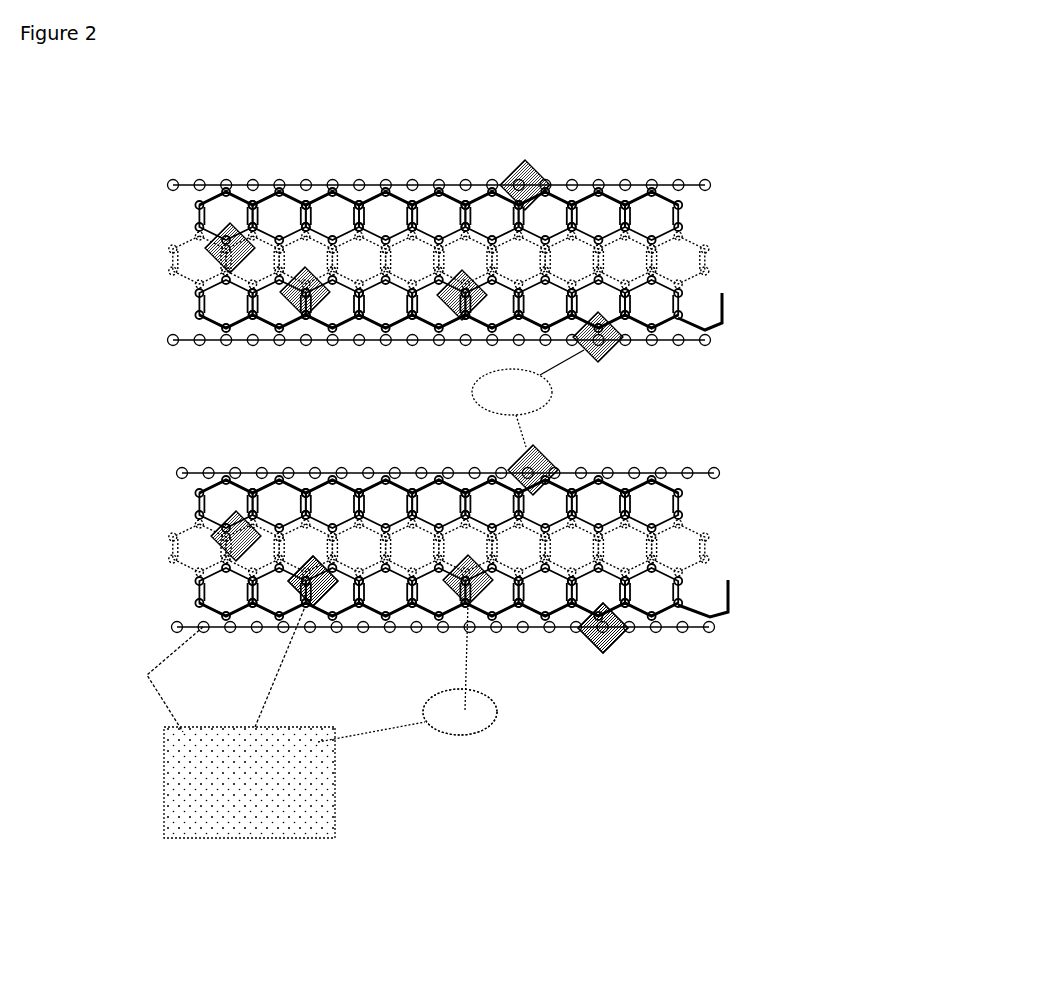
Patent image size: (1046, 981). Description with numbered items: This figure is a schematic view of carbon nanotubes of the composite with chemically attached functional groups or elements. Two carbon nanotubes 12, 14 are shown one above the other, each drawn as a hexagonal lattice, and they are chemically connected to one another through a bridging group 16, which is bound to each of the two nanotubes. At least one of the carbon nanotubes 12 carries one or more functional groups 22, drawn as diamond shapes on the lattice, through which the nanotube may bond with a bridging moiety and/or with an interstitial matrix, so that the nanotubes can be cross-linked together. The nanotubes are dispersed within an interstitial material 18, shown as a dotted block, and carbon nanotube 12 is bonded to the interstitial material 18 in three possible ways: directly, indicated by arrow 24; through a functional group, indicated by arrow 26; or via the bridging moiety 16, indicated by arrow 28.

The carbon nanotube 14 is at (667, 182).
The carbon nanotube 12 is at (700, 470).
The bridging group 16 is at (474, 400).
The functional group 22 is at (614, 638).
The arrow indicating bonding through a functional group 26 is at (298, 645).
The arrow indicating direct bonding 24 is at (138, 695).
The interstitial material 18 is at (335, 765).
The arrow indicating bonding via bridging moiety 28 is at (512, 716).